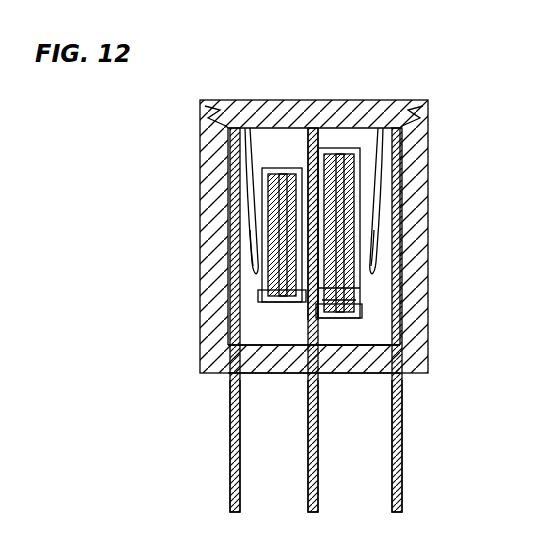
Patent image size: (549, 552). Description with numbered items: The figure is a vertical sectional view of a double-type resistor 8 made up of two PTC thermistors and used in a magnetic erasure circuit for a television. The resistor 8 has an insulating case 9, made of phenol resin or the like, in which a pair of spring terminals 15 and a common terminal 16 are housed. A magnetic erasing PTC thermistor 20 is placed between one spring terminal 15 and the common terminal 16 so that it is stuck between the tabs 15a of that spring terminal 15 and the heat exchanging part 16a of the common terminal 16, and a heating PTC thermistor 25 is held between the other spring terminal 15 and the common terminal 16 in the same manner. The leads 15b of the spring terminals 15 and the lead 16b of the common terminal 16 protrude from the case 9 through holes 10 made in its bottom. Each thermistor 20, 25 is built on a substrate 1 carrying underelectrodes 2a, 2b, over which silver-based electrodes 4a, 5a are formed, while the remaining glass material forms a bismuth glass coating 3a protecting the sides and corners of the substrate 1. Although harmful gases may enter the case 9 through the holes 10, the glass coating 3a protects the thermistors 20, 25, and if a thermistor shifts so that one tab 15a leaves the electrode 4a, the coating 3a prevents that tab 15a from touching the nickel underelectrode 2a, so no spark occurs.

The double-type resistor 8 is at (210, 66).
The insulating case 9 is at (422, 238).
The substrate 1 is at (347, 370).
The electrode 5a is at (278, 368).
The holes 10 is at (250, 372).
The spring terminals 15 is at (242, 165).
The tabs 15a is at (246, 208).
The leads 15b is at (230, 463).
The common terminal 16 is at (308, 490).
The heat exchanging part 16a is at (288, 304).
The lead 16b is at (318, 455).
The underelectrode 2b is at (334, 148).
The heating PTC thermistor 25 is at (277, 160).
The magnetic erasing PTC thermistor 20 is at (362, 140).
The underelectrode 2a is at (355, 303).
The bismuth glass coating 3a is at (352, 314).
The electrode 4a is at (362, 290).